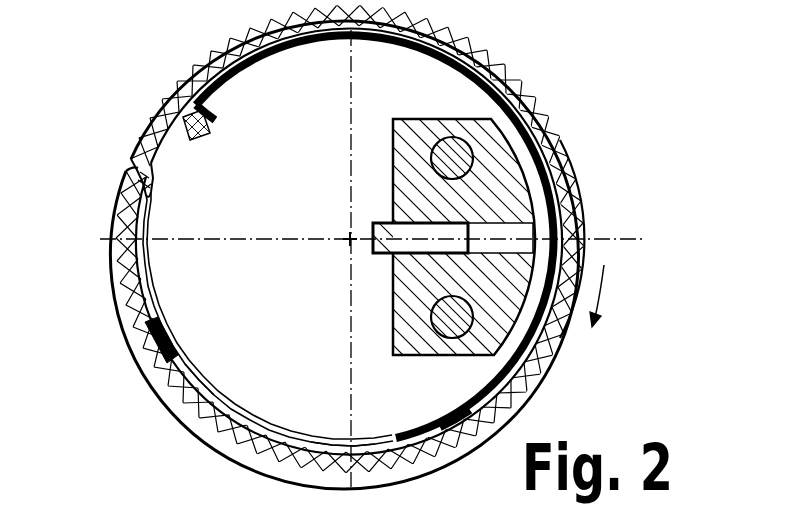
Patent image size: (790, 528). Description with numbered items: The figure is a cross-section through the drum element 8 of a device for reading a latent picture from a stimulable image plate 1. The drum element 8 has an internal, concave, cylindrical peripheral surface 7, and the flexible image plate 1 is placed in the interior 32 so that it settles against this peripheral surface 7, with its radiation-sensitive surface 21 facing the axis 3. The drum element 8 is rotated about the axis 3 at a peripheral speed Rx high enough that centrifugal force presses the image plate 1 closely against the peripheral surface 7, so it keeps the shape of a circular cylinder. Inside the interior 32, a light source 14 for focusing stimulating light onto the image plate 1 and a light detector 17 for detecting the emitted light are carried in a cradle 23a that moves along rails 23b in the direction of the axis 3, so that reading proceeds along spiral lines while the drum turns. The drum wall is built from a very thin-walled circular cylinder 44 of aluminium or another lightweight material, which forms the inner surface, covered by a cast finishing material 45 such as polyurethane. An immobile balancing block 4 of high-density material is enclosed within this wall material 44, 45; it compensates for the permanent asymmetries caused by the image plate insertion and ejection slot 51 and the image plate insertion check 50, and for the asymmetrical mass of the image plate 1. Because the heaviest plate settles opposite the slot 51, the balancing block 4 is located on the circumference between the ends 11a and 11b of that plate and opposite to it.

The image plate 1 is at (453, 408).
The axis 3 is at (348, 243).
The immobile balancing block 4 is at (163, 350).
The peripheral surface 7 is at (208, 385).
The drum element 8 is at (118, 296).
The end of the heaviest image plate 11a is at (212, 113).
The end of the heaviest image plate 11b is at (356, 437).
The light source 14 is at (375, 231).
The light detector 17 is at (414, 222).
The radiation-sensitive surface 21 is at (252, 68).
The cradle 23a is at (393, 133).
The rails 23b is at (438, 142).
The interior 32 is at (291, 294).
The thin-walled circular cylinder 44 is at (147, 270).
The finishing material 45 is at (560, 164).
The image plate insertion check 50 is at (194, 142).
The image plate insertion and ejection slot 51 is at (133, 171).
The peripheral speed Rx is at (629, 296).